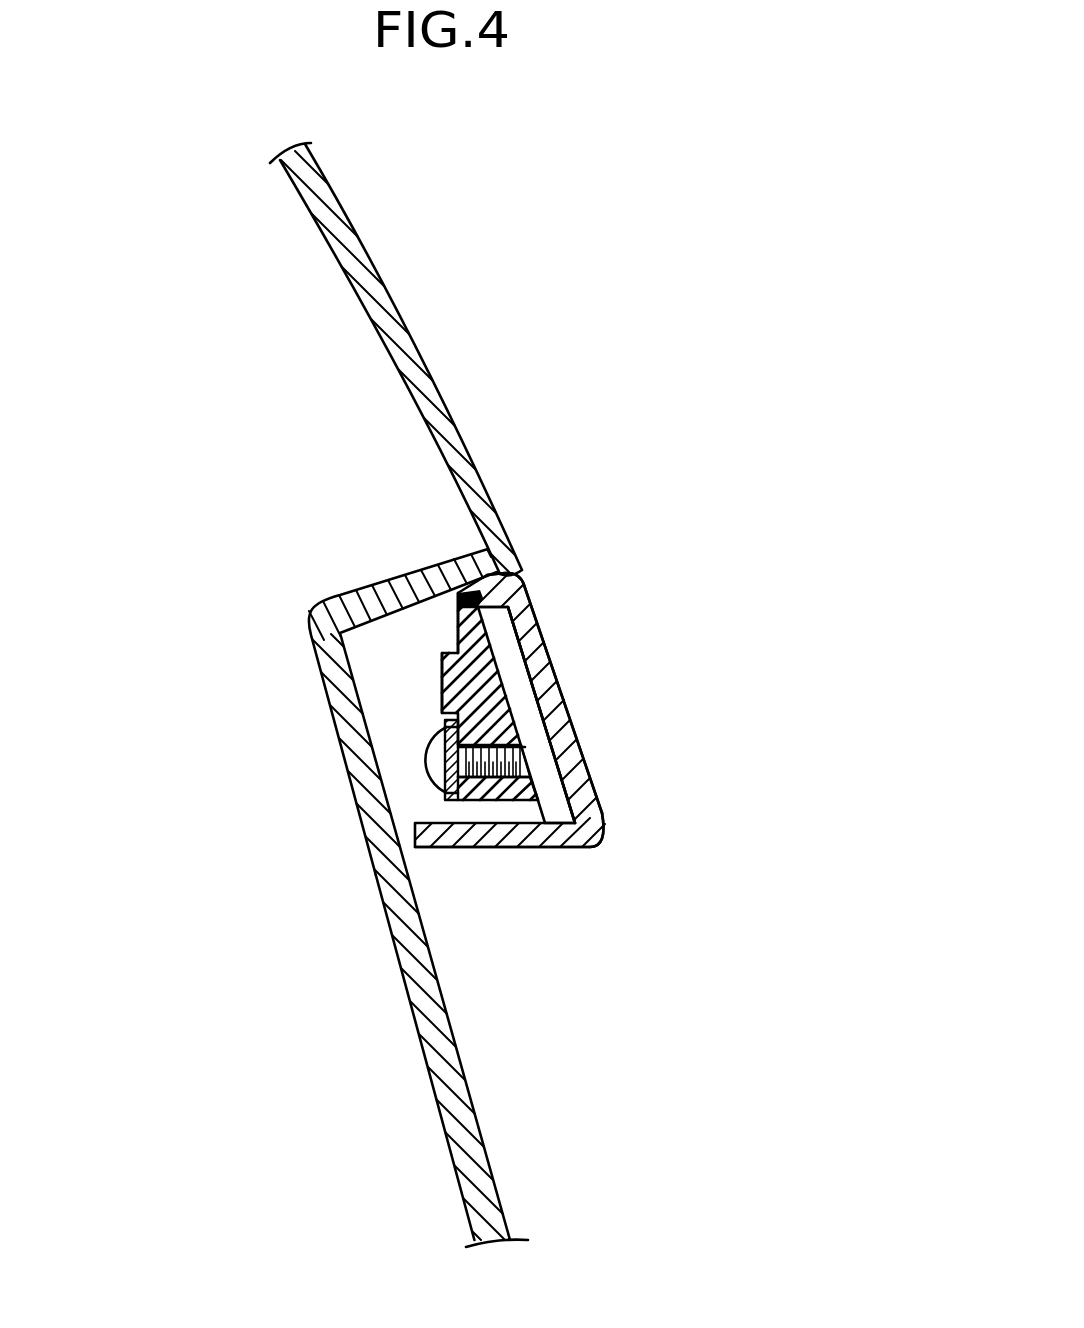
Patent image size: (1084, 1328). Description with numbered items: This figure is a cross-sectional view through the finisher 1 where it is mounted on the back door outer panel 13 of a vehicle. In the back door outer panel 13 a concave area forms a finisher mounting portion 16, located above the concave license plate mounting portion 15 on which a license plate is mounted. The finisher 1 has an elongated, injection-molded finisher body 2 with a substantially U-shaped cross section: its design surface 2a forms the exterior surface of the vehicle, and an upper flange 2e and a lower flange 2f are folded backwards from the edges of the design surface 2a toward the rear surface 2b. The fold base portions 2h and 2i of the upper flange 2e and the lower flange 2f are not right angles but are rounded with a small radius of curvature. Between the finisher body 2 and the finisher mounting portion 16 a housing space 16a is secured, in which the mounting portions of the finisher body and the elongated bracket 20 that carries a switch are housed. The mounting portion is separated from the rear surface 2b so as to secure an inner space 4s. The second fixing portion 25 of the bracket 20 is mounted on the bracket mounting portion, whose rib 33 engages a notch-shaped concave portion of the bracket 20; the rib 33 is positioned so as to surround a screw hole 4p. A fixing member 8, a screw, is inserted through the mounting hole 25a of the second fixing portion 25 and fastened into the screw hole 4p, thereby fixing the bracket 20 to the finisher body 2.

The finisher 1 is at (627, 585).
The finisher body 2 is at (603, 790).
The design surface 2a is at (548, 645).
The rear surface 2b is at (535, 703).
The upper flange 2e is at (482, 592).
The lower flange 2f is at (523, 848).
The fold base portion 2h is at (512, 572).
The fold base portion 2i is at (606, 834).
The inner space 4s is at (502, 647).
The screw hole 4p is at (522, 768).
The fixing member 8 is at (457, 777).
The back door outer panel 13 is at (424, 385).
The license plate mounting portion 15 is at (458, 1088).
The finisher mounting portion 16 is at (380, 752).
The housing space 16a is at (380, 672).
The bracket 20 is at (437, 803).
The second fixing portion 25 is at (453, 840).
The mounting hole 25a is at (425, 752).
The rib 33 is at (445, 672).